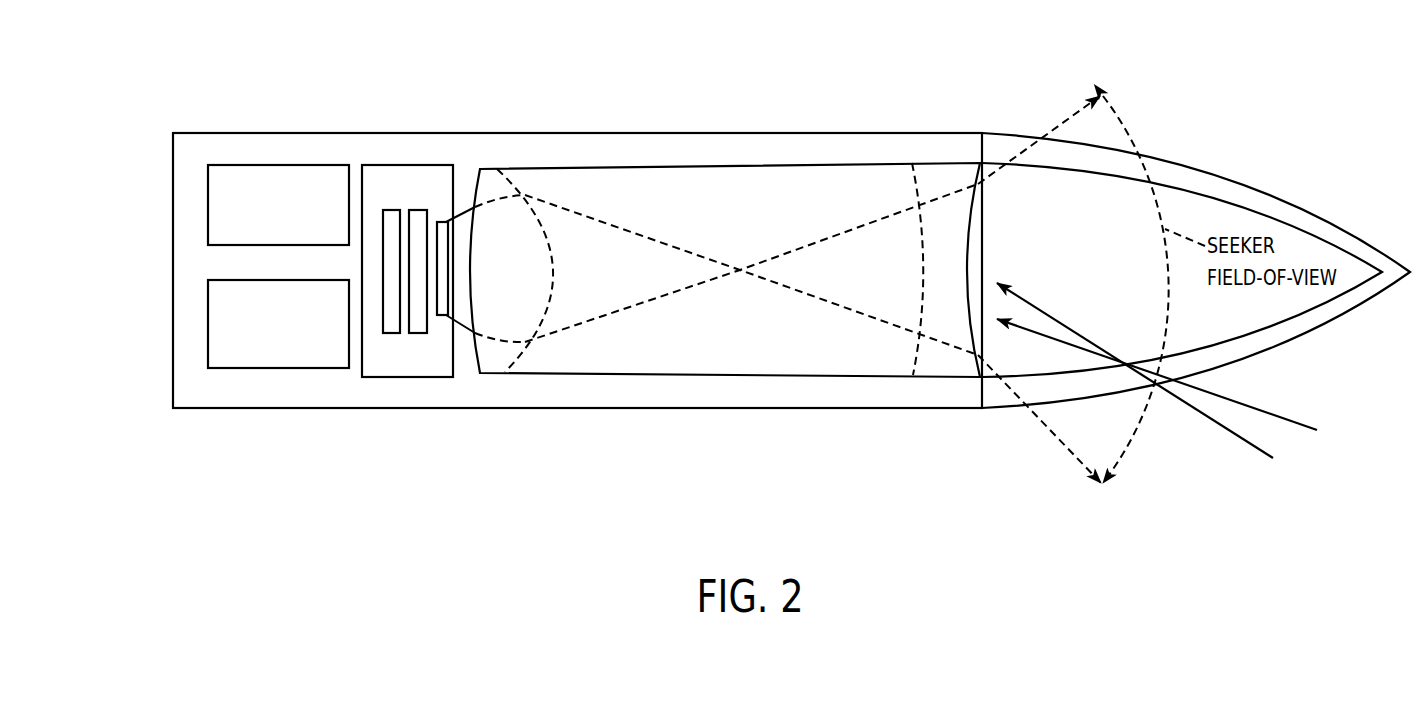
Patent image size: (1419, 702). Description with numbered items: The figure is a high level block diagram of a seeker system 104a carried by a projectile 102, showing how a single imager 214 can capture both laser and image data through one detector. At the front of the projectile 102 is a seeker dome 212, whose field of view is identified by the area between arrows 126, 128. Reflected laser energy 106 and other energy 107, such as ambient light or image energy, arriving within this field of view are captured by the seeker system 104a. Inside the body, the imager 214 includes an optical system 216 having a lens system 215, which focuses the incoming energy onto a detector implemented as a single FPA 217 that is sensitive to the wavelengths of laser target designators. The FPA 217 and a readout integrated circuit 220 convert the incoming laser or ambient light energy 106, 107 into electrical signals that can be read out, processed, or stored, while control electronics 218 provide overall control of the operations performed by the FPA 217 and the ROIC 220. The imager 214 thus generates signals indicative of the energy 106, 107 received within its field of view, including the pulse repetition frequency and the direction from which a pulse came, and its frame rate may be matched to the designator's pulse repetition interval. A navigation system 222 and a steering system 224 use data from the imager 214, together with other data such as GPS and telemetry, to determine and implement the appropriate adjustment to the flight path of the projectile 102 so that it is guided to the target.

The seeker system 104a is at (1356, 78).
The projectile 102 is at (632, 408).
The seeker dome 212 is at (1202, 177).
The optical system 216 is at (780, 377).
The lens system 215 is at (524, 233).
The imager 214 is at (408, 377).
The control electronics 218 is at (392, 333).
The readout integrated circuit (ROIC) 220 is at (417, 333).
The focal plane array (FPA) 217 is at (446, 316).
The navigation system 222 is at (208, 208).
The steering system 224 is at (208, 330).
The arrow 128 is at (1047, 135).
The arrow 126 is at (1053, 437).
The reflected laser energy 106 is at (1238, 436).
The other energy 107 is at (1300, 425).